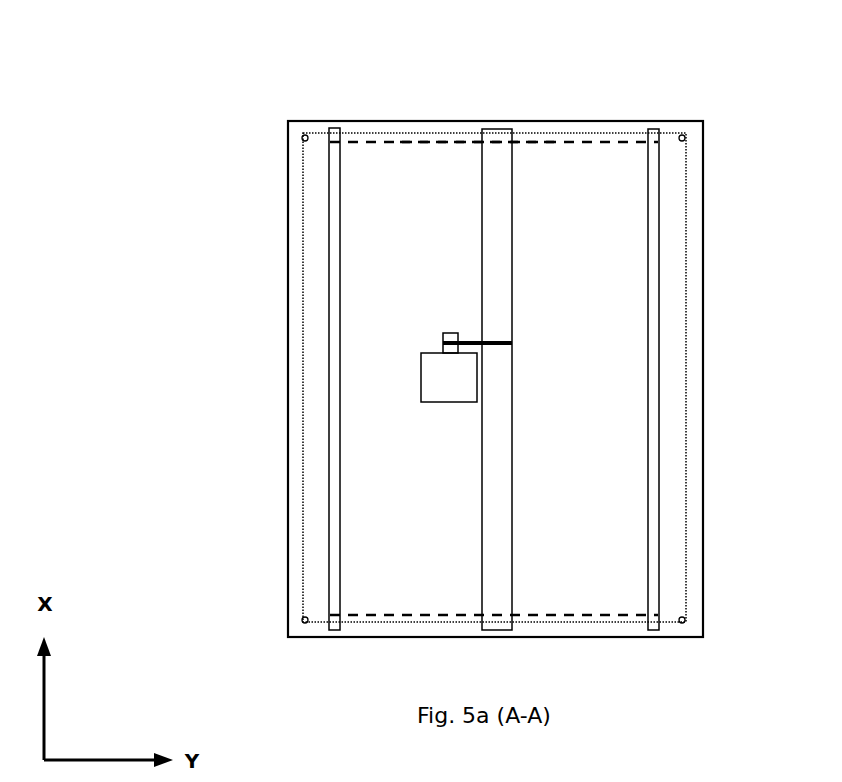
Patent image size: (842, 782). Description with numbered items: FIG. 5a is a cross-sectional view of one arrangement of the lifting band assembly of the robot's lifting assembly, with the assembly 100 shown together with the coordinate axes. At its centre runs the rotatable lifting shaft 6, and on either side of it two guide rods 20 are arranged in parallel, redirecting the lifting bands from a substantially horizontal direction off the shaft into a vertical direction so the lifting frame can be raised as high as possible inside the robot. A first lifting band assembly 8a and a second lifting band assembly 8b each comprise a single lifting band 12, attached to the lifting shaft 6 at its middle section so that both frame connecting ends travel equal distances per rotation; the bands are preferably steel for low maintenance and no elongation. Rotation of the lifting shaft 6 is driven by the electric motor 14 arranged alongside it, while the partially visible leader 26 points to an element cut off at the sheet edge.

The sample holder assembly 100 is at (110, 694).
The guide rods 20 is at (328, 333).
The rotatable lifting shaft 6 is at (500, 470).
The first lifting band assembly 8a is at (600, 138).
The second lifting band assembly 8b is at (598, 626).
The lifting band 12 is at (565, 142).
The electric motor 14 is at (430, 375).
The element 26 is at (545, 781).